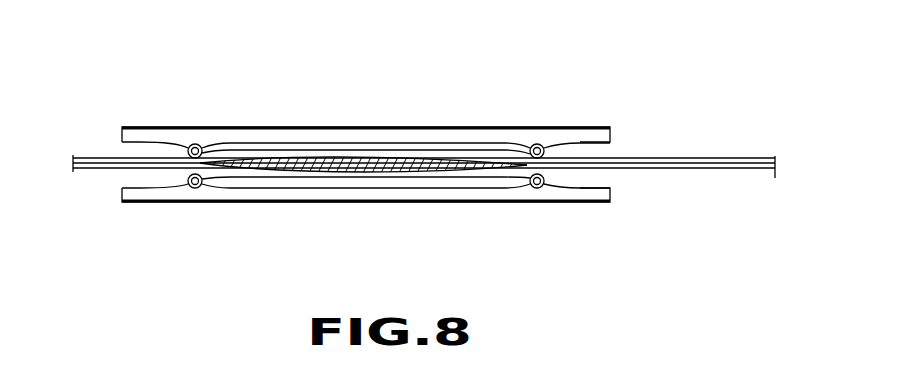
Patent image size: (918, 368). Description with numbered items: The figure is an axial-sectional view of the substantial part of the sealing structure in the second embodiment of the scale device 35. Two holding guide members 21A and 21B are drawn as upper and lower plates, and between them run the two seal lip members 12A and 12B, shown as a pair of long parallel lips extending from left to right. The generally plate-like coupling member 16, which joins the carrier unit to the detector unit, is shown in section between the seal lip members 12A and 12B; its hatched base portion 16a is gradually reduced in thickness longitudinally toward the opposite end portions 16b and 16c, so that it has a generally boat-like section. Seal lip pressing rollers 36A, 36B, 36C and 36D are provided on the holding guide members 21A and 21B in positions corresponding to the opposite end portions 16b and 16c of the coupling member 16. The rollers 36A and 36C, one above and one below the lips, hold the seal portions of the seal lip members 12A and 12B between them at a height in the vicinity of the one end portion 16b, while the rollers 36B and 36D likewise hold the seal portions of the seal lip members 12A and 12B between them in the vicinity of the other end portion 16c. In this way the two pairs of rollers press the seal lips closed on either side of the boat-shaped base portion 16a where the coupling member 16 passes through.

The scale device 35 is at (367, 38).
The seal lip member 12A is at (95, 158).
The seal lip member 12B is at (100, 170).
The coupling member 16 is at (367, 167).
The base portion 16a is at (322, 156).
The end portion 16b is at (232, 178).
The end portion 16c is at (507, 178).
The holding guide member 21A is at (410, 128).
The holding guide member 21B is at (412, 194).
The seal lip pressing roller 36A is at (193, 144).
The seal lip pressing roller 36B is at (535, 144).
The seal lip pressing roller 36C is at (186, 188).
The seal lip pressing roller 36D is at (542, 189).